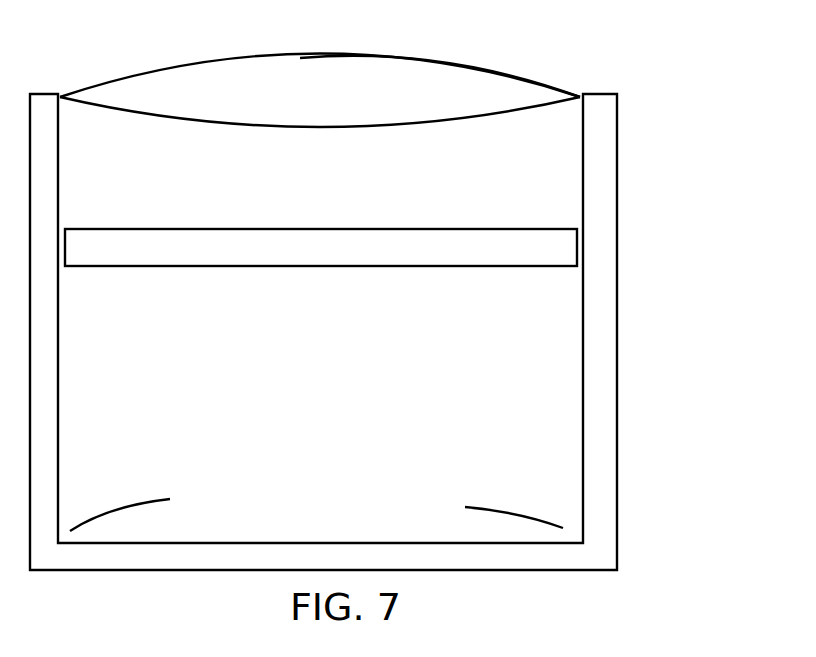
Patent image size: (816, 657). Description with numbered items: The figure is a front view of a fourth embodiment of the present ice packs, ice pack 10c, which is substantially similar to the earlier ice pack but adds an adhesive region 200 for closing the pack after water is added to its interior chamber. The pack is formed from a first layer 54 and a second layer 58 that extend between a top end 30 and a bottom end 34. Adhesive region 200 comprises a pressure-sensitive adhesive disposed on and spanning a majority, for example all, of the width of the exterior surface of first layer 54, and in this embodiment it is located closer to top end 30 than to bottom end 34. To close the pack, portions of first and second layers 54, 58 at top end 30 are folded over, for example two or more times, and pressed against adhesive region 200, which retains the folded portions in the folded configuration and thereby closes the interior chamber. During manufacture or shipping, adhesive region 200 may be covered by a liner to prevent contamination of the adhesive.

The ice pack 10c is at (660, 96).
The top end 30 is at (139, 72).
The bottom end 34 is at (535, 572).
The first layer 54 is at (390, 126).
The second layer 58 is at (467, 68).
The adhesive region 200 is at (527, 254).